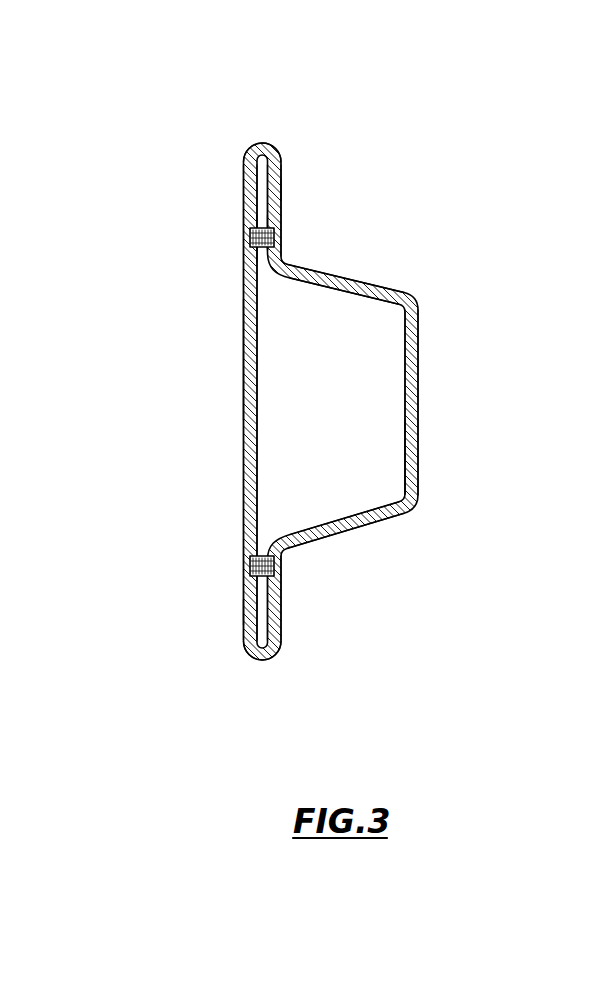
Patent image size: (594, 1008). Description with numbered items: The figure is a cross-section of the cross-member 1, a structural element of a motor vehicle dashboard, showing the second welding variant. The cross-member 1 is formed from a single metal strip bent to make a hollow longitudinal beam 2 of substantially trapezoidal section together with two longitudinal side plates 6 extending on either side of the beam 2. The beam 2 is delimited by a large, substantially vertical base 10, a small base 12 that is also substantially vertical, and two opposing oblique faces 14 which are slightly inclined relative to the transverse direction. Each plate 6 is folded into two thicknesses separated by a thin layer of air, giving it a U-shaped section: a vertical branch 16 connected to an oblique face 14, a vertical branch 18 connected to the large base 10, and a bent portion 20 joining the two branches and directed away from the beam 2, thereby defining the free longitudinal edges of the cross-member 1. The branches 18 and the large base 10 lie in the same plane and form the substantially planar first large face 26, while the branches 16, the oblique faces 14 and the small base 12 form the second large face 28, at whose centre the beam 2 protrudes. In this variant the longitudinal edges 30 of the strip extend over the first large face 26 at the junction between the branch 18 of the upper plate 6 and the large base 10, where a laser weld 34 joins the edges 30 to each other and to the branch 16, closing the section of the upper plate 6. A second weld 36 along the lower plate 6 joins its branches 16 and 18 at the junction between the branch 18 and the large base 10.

The cross-member 1 is at (507, 286).
The longitudinal beam 2 is at (521, 340).
The longitudinal side plate 6 is at (330, 186).
The large base 10 is at (244, 447).
The small base 12 is at (418, 453).
The oblique face 14 is at (356, 281).
The vertical branch connected to oblique face 16 is at (281, 174).
The vertical branch connected to large base 18 is at (244, 175).
The bent portion 20 is at (259, 143).
The first large face 26 is at (236, 354).
The second large face 28 is at (432, 484).
The longitudinal edges of the metal strip 30 is at (246, 222).
The weld 34 is at (276, 239).
The second weld 36 is at (276, 566).